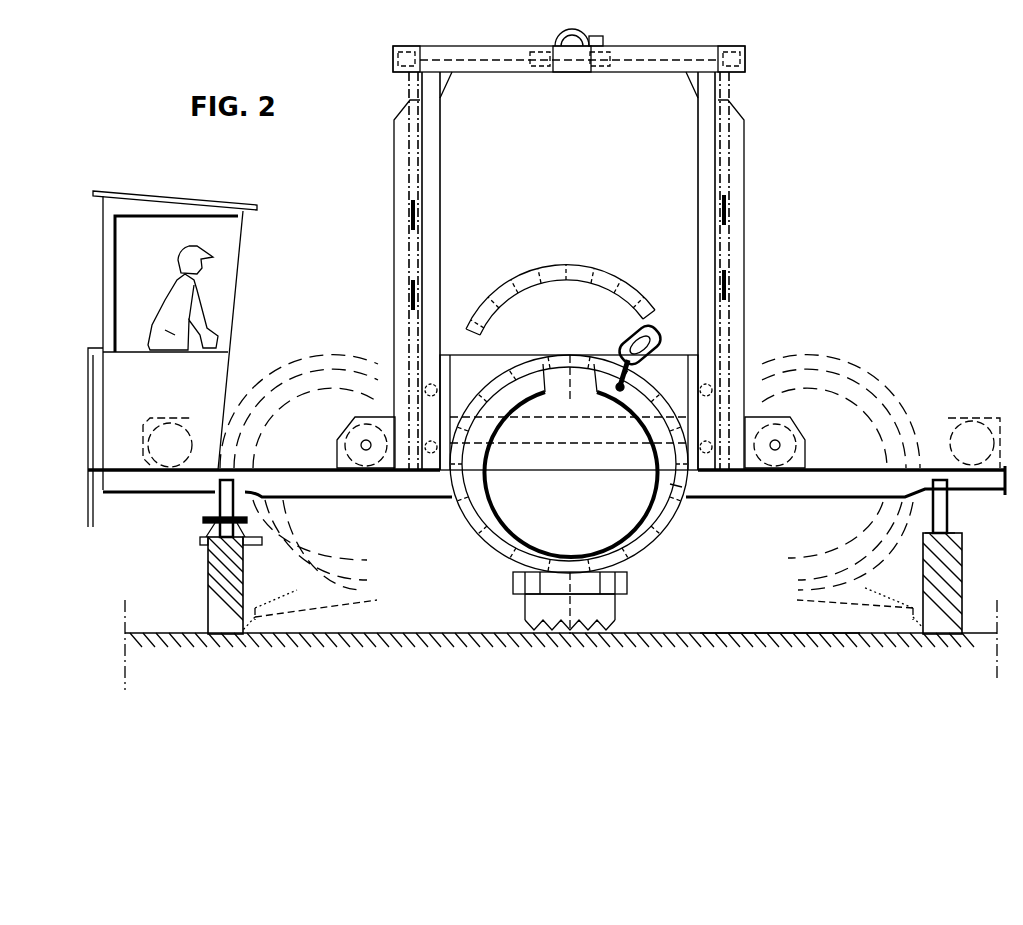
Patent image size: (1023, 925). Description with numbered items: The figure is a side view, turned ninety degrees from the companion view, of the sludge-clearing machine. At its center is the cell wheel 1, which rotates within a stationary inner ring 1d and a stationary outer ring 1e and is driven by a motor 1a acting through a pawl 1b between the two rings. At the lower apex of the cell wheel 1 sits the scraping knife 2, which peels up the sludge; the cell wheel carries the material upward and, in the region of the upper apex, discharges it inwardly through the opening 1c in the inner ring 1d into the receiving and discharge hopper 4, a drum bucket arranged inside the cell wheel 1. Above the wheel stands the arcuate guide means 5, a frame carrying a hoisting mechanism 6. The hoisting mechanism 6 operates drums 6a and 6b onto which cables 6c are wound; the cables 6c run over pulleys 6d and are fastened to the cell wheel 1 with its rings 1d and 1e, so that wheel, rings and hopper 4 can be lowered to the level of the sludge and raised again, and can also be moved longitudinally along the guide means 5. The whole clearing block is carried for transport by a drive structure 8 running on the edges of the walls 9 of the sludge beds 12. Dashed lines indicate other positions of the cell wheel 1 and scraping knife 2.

The cell wheel 1 is at (684, 527).
The motor 1a is at (650, 343).
The pawl 1b is at (622, 393).
The opening 1c is at (570, 300).
The inner ring 1d is at (662, 490).
The outer ring 1e is at (488, 390).
The scraping knife 2 is at (292, 606).
The receiving and discharge hopper 4 is at (562, 501).
The arcuate guide means 5 is at (707, 93).
The hoisting mechanism 6 is at (560, 44).
The drum 6a is at (418, 48).
The drum 6b is at (720, 48).
The cables 6c is at (417, 95).
The pulleys 6d is at (425, 217).
The drive structure 8 is at (897, 482).
The walls 9 is at (218, 588).
The sludge beds 12 is at (778, 623).